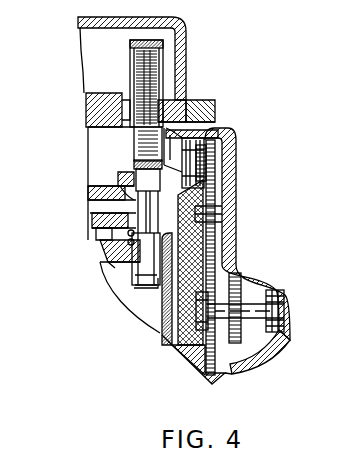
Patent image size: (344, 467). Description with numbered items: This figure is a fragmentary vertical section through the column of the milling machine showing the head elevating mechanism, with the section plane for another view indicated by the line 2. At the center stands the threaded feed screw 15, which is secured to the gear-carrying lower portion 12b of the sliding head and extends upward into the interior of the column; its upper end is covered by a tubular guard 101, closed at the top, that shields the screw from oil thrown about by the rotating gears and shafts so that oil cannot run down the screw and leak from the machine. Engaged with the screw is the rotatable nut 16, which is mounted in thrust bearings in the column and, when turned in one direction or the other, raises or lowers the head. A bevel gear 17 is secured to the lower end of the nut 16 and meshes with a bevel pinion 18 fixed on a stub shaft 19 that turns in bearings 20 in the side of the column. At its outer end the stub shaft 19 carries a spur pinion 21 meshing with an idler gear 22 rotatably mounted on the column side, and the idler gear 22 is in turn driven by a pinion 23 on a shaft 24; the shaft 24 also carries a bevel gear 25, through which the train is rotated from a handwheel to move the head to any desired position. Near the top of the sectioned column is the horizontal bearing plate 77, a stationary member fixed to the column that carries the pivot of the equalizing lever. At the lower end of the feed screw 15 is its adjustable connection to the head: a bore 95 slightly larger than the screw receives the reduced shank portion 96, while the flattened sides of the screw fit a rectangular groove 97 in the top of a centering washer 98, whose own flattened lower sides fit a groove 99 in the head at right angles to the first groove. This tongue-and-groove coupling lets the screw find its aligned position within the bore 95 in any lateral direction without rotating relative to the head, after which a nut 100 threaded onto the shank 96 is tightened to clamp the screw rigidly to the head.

The line 2—2 / section plane indication 2 is at (76, 48).
The tubular guard 101 is at (162, 48).
The feed screw 15 is at (143, 69).
The bearing plate 77 is at (95, 115).
The bevel pinion 18 is at (190, 118).
The bearings 20 is at (221, 118).
The stub shaft 19 is at (224, 141).
The spur pinion 21 is at (220, 182).
The idler gear 22 is at (220, 211).
The rotatable nut 16 is at (128, 152).
The bevel gear 17 is at (120, 176).
The gear-carrying lower portion 12b is at (102, 257).
The rectangular groove 97 is at (98, 229).
The centering washer 98 is at (128, 233).
The groove 99 is at (128, 242).
The bore 95 is at (106, 255).
The nut 100 is at (112, 266).
The reduced shank portion 96 is at (146, 281).
The shaft 24 is at (248, 310).
The pinion 23 is at (192, 344).
The bevel gear 25 is at (258, 345).